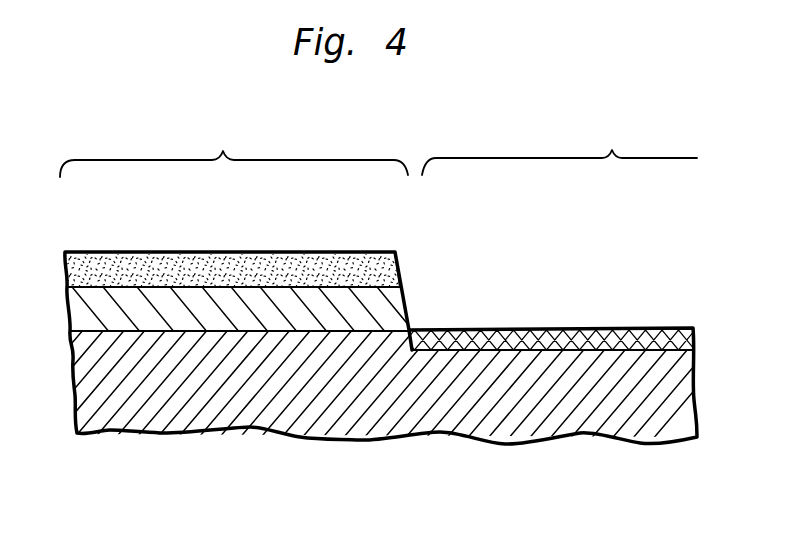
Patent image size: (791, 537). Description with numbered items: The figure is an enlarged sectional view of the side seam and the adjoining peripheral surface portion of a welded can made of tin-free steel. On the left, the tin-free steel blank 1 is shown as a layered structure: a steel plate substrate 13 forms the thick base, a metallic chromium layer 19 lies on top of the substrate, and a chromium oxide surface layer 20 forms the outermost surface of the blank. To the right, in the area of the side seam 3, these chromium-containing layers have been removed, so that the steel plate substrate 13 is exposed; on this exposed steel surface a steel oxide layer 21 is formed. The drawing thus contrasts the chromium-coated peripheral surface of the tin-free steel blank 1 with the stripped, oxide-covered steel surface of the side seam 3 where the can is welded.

The tin-free steel blank 1 is at (234, 147).
The side seam 3 is at (559, 146).
The steel plate substrate 13 is at (561, 411).
The metallic chromium layer 19 is at (93, 308).
The chromium oxide surface layer 20 is at (182, 263).
The steel oxide layer 21 is at (537, 330).